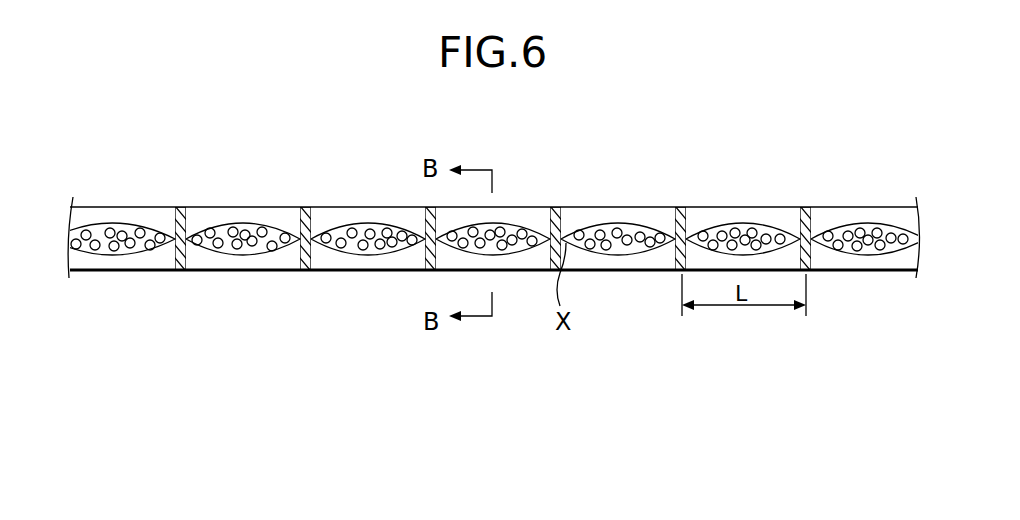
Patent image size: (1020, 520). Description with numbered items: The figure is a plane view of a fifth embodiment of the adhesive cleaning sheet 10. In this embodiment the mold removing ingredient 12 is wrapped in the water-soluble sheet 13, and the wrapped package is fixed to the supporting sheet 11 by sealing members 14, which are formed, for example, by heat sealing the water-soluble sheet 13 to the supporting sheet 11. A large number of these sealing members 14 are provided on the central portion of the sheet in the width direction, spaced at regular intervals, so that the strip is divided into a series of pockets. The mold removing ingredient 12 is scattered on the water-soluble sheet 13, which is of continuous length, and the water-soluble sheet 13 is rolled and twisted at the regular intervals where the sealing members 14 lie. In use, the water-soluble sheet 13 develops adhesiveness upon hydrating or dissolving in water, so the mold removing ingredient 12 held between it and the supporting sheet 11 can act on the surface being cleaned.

The adhesive cleaning sheet 10 is at (748, 160).
The supporting sheet 11 is at (251, 213).
The mold removing ingredient 12 is at (462, 247).
The water-soluble sheet 13 is at (299, 250).
The sealing members 14 is at (677, 237).